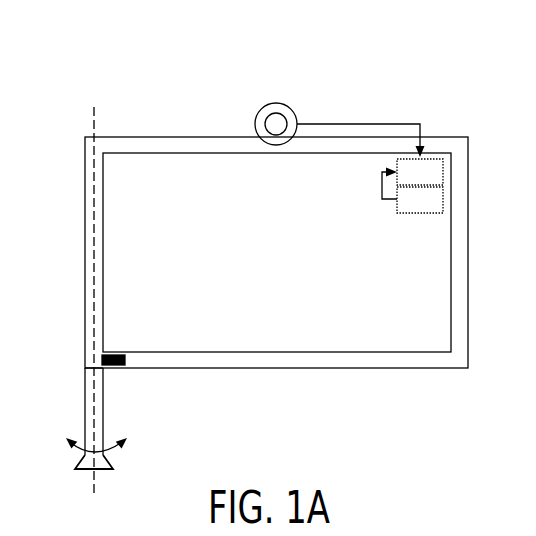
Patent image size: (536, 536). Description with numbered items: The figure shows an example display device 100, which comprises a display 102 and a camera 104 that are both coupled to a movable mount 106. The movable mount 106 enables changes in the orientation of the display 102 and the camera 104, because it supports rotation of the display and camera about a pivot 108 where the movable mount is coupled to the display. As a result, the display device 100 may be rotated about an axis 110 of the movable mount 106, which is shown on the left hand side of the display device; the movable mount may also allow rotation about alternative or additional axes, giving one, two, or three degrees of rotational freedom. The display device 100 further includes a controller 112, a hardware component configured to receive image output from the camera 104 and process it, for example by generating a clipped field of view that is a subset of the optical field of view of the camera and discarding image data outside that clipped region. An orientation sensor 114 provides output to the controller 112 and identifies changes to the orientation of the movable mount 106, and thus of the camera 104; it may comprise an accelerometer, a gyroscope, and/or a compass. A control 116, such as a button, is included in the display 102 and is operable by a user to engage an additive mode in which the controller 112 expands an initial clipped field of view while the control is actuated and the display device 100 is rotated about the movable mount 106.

The display device 100 is at (274, 46).
The display 102 is at (85, 137).
The camera 104 is at (297, 115).
The movable mount 106 is at (83, 456).
The pivot 108 is at (72, 370).
The axis 110 is at (95, 108).
The controller 112 is at (435, 182).
The orientation sensor 114 is at (435, 210).
The control 116 is at (120, 368).